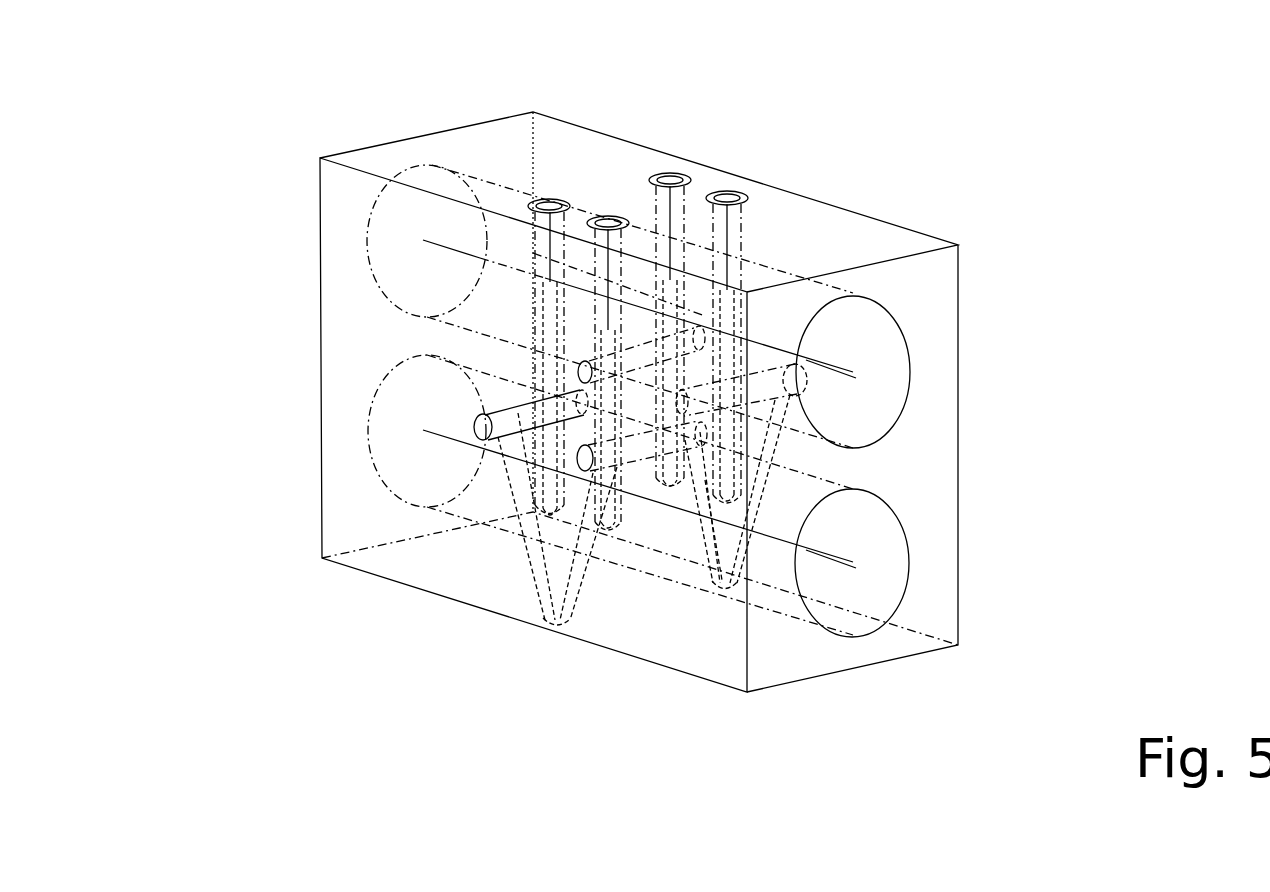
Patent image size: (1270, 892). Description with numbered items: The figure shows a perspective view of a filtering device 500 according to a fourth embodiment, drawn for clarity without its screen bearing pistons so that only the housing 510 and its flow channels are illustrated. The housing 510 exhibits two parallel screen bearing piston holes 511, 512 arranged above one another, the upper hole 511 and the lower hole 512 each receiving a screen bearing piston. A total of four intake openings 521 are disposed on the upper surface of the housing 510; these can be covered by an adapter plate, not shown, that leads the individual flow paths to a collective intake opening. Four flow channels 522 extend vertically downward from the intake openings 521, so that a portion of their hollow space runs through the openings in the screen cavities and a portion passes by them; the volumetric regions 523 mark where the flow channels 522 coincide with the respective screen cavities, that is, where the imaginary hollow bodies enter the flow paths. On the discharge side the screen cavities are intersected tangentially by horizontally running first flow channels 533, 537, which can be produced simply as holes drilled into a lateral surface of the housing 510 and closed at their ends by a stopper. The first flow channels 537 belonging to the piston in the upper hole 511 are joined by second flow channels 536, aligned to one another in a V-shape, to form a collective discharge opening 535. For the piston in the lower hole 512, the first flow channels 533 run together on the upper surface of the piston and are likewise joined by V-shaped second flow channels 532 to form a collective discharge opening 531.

The filtering device 500 is at (228, 118).
The housing 510 is at (484, 128).
The upper screen bearing piston hole 511 is at (910, 343).
The lower screen bearing piston hole 512 is at (910, 560).
The intake openings 521 is at (550, 203).
The flow channels 522 is at (550, 254).
The volumetric regions 523 is at (743, 322).
The collective discharge opening 531 is at (577, 480).
The second flow channels 532 is at (520, 415).
The first flow channels 533 is at (523, 420).
The collective discharge opening 535 is at (718, 480).
The second flow channels 536 is at (740, 530).
The first flow channels 537 is at (747, 392).